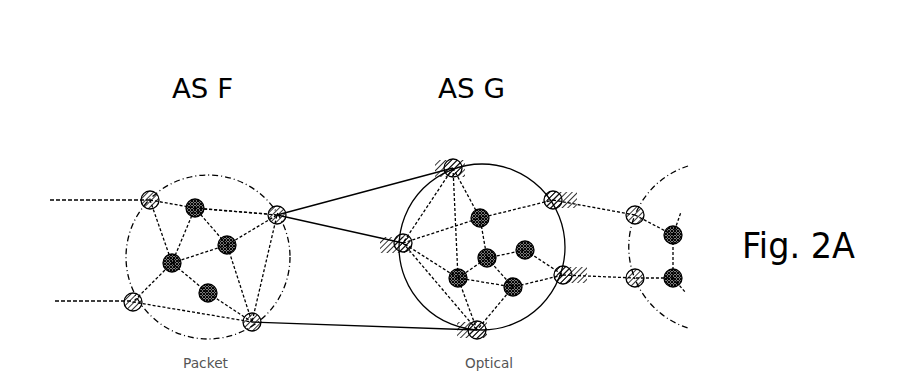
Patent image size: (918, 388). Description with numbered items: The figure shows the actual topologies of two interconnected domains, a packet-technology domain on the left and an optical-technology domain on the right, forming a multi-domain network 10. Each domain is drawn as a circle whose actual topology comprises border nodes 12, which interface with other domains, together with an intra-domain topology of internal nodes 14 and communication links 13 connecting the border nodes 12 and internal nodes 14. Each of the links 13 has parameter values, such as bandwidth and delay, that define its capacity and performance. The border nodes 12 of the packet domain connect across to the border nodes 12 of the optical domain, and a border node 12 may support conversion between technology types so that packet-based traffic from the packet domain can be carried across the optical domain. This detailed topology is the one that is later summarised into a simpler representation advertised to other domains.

The multi-layer network 10 is at (344, 88).
The border node 12 is at (147, 191).
The communication link 13 is at (236, 206).
The internal node 14 is at (199, 199).